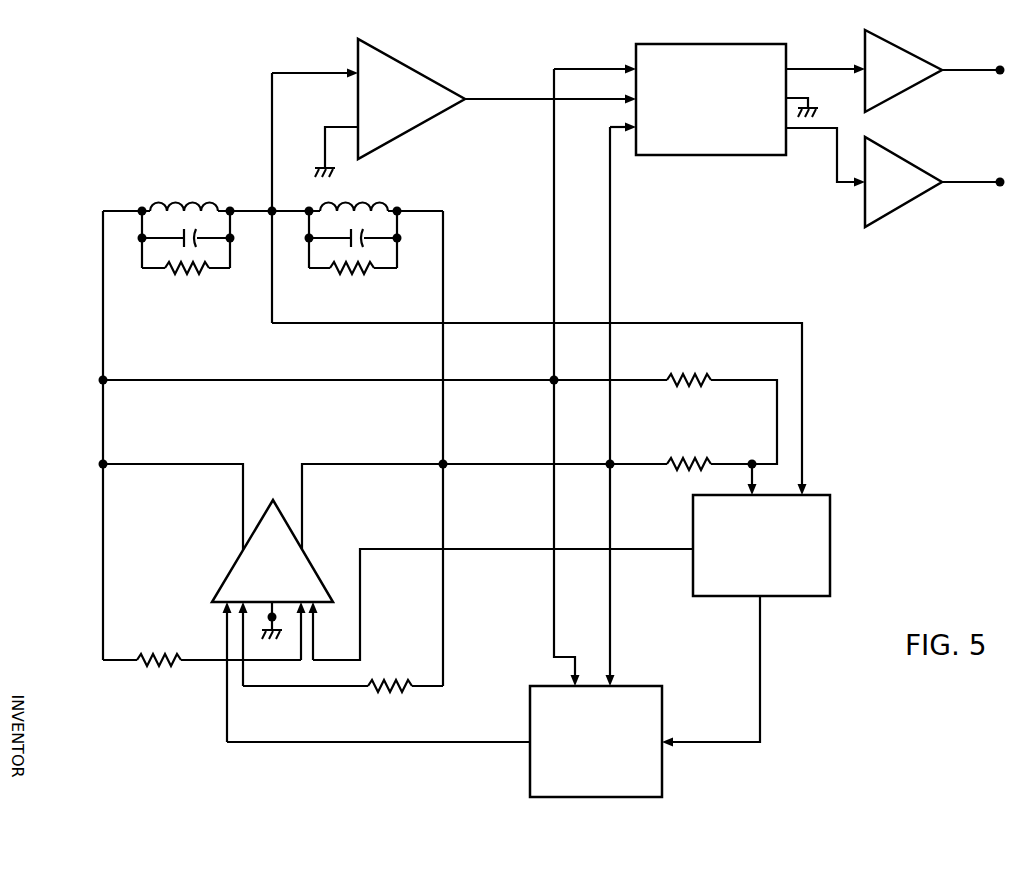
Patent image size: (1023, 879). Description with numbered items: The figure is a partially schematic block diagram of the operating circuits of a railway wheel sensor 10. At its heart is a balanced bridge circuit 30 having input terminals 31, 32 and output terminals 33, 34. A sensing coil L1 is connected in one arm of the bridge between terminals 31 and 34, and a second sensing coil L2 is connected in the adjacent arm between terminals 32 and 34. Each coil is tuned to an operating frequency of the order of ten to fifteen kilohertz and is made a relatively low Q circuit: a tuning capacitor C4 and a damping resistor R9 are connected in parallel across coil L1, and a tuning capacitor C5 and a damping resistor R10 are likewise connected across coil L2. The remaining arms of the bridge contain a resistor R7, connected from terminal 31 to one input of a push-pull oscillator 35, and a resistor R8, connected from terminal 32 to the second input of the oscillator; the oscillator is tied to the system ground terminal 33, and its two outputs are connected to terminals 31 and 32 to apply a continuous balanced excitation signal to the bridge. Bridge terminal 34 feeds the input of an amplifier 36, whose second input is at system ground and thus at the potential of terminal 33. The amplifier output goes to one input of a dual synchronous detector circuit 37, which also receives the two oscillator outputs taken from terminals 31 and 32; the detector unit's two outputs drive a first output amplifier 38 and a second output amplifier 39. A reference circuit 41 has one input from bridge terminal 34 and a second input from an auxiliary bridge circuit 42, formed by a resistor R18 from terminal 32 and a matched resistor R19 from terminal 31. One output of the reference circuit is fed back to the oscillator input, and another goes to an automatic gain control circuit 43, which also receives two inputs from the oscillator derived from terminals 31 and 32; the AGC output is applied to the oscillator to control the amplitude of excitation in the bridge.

The wheel sensor 10 is at (176, 99).
The balanced bridge circuit 30 is at (292, 415).
The input terminal 31 is at (101, 380).
The input terminal 32 is at (444, 464).
The output terminal 33 is at (276, 617).
The output terminal 34 is at (270, 211).
The push-pull oscillator 35 is at (283, 510).
The amplifier 36 is at (443, 88).
The dual synchronous detector circuit 37 is at (710, 156).
The first output amplifier 38 is at (915, 92).
The second output amplifier 39 is at (912, 205).
The reference circuit 41 is at (830, 553).
The auxiliary bridge circuit 42 is at (703, 423).
The automatic gain control circuit 43 is at (651, 686).
The sensing coil L1 is at (190, 208).
The sensing coil L2 is at (372, 208).
The tuning capacitor C4 is at (182, 240).
The tuning capacitor C5 is at (350, 240).
The resistor R7 is at (160, 664).
The resistor R8 is at (395, 690).
The damping resistor R9 is at (188, 272).
The damping resistor R10 is at (355, 272).
The resistor R18 is at (692, 462).
The matched resistor R19 is at (692, 378).